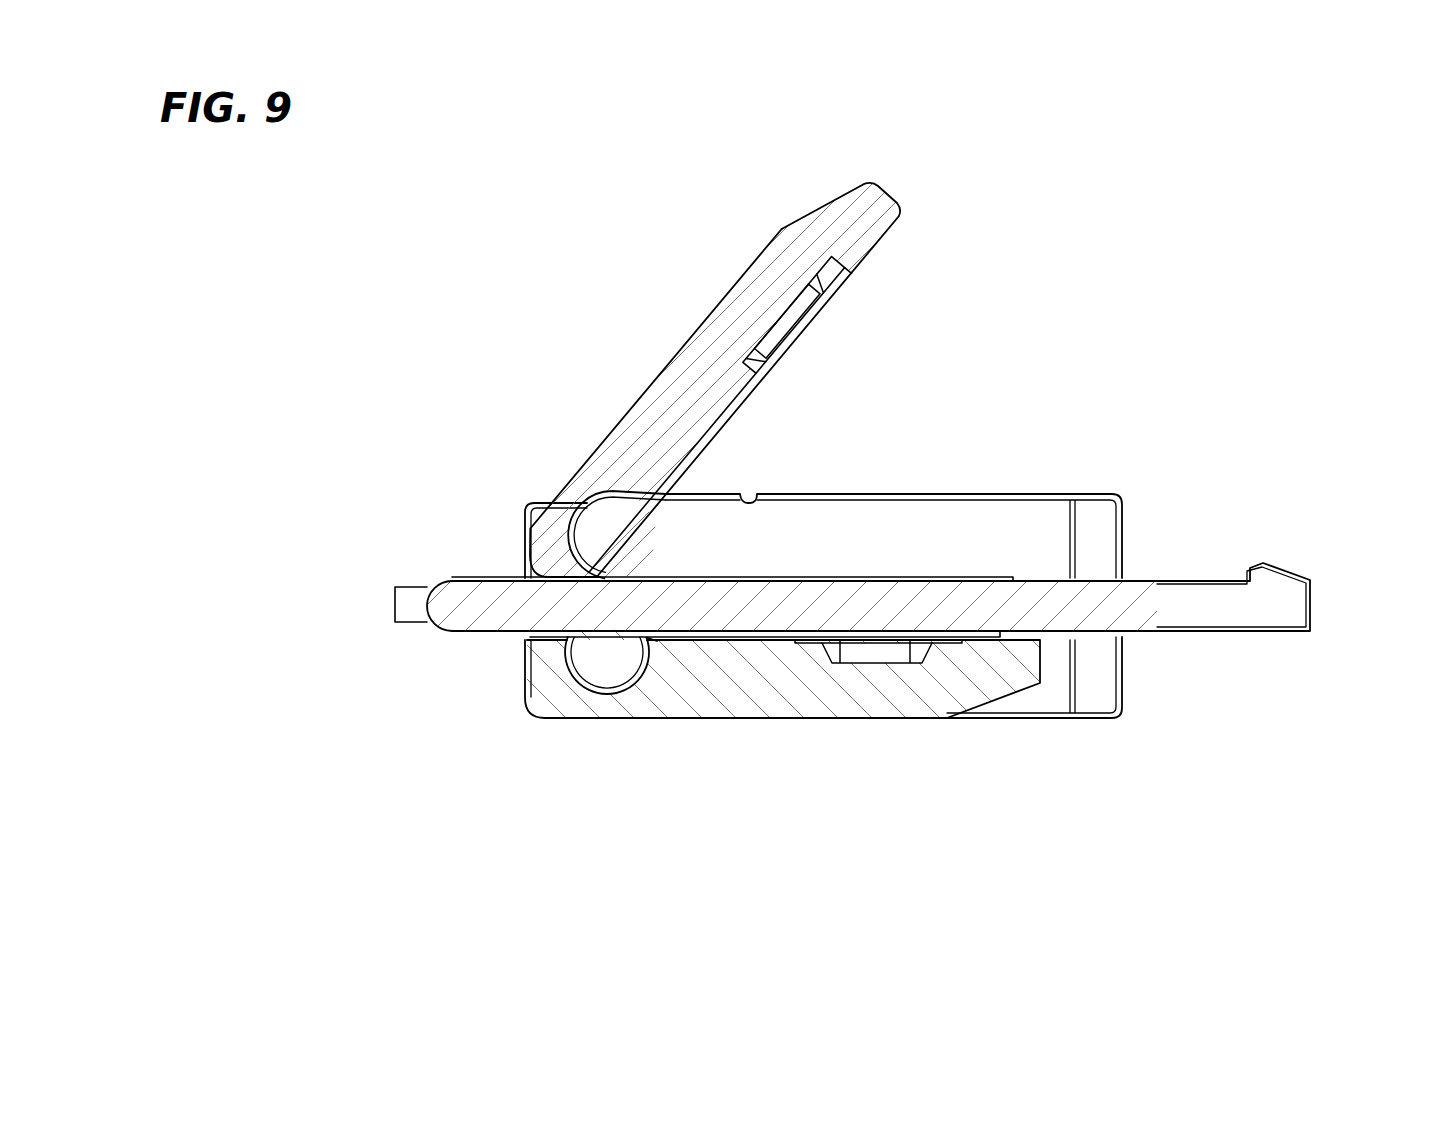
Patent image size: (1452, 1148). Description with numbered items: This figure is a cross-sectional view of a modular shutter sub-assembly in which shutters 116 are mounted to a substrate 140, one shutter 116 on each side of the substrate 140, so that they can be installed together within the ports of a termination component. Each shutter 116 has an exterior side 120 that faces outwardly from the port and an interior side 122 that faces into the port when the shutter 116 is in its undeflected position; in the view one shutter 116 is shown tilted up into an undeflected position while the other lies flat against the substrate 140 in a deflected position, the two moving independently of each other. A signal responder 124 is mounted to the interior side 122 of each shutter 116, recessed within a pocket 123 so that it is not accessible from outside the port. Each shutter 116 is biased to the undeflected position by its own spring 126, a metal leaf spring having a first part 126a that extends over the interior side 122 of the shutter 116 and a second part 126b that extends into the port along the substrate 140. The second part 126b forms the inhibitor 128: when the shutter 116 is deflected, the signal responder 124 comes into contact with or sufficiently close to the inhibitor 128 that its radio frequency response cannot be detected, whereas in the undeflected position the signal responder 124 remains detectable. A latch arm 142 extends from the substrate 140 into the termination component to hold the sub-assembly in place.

The shutter 116 is at (697, 340).
The exterior side 120 is at (723, 517).
The interior side 122 is at (880, 243).
The pocket 123 is at (803, 293).
The signal responder 124 is at (800, 333).
The spring 126 is at (588, 508).
The first part 126a is at (700, 447).
The second part 126b is at (857, 579).
The inhibitor 128 is at (765, 634).
The substrate 140 is at (738, 587).
The latch arm 142 is at (1292, 570).